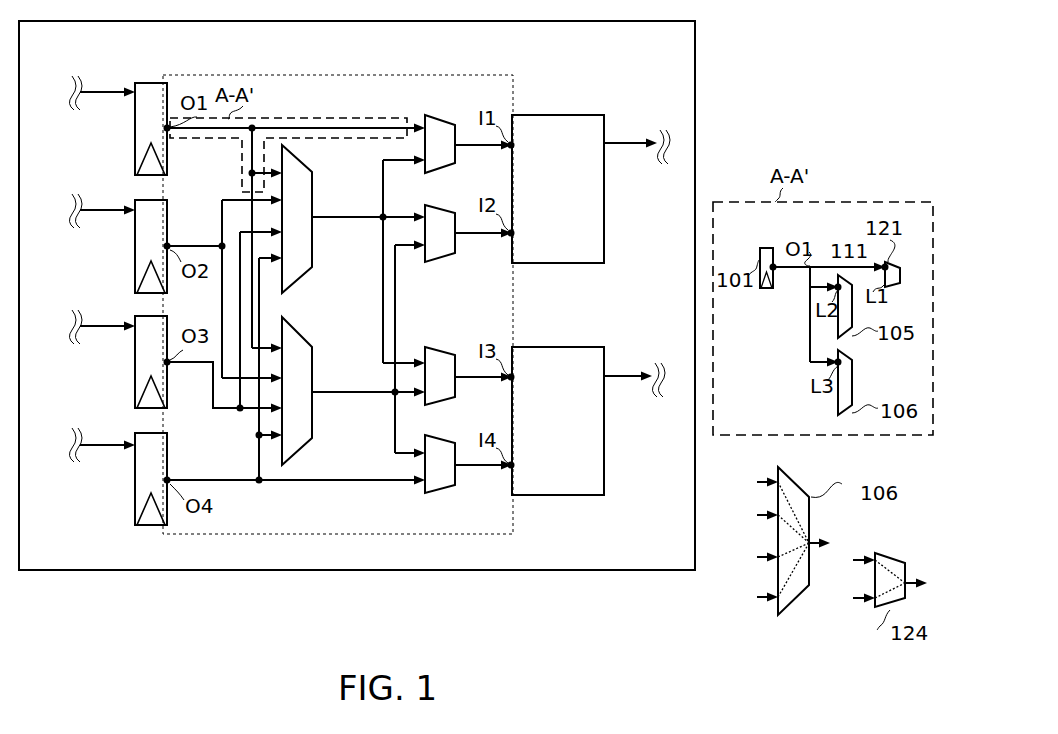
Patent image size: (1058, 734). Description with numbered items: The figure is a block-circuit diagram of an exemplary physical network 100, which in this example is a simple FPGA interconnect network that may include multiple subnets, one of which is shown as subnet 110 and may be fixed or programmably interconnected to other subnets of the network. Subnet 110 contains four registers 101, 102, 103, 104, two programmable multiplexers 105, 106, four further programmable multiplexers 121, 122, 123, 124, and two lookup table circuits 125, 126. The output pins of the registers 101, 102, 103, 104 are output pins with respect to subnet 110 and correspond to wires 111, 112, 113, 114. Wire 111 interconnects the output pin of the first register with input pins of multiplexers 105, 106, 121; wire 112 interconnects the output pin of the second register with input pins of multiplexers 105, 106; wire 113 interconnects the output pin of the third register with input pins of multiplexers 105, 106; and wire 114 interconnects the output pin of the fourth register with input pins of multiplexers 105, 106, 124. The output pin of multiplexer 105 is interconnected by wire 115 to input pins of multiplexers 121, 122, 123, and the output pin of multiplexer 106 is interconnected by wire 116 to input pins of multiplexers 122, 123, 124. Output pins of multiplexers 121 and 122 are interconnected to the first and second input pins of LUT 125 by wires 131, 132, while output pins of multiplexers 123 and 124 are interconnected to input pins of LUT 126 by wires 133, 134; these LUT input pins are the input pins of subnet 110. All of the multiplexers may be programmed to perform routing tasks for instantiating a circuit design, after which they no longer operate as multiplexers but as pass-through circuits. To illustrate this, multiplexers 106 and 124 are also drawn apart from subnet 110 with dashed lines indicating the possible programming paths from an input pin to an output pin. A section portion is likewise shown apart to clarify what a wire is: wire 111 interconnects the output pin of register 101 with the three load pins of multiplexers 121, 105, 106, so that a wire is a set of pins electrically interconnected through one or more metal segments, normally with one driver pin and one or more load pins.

The physical network 100 is at (704, 100).
The register 101 is at (133, 147).
The register 102 is at (133, 263).
The register 103 is at (133, 380).
The register 104 is at (133, 495).
The programmable multiplexer 105 is at (287, 292).
The programmable multiplexer 106 is at (292, 318).
The subnet 110 is at (222, 75).
The wire 111 is at (257, 125).
The wire 112 is at (220, 244).
The wire 113 is at (241, 411).
The wire 114 is at (276, 500).
The wire 115 is at (381, 221).
The wire 116 is at (393, 396).
The programmable multiplexer 121 is at (438, 116).
The programmable multiplexer 122 is at (443, 263).
The programmable multiplexer 123 is at (431, 346).
The programmable multiplexer 124 is at (437, 495).
The lookup table circuit 125 is at (591, 189).
The lookup table circuit 126 is at (588, 421).
The wire 131 is at (493, 148).
The wire 132 is at (481, 235).
The wire 133 is at (493, 379).
The wire 134 is at (483, 467).